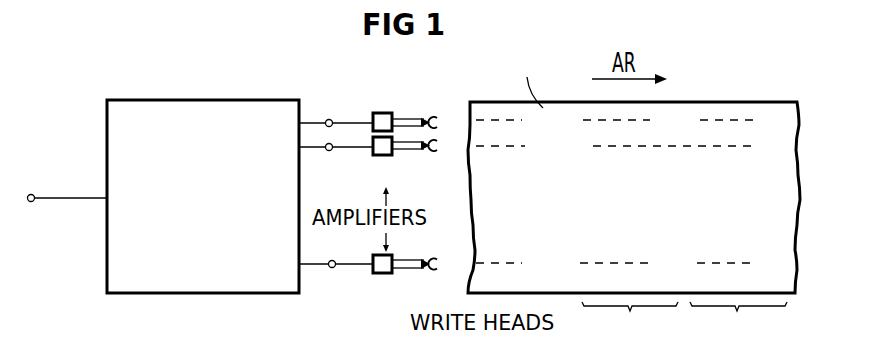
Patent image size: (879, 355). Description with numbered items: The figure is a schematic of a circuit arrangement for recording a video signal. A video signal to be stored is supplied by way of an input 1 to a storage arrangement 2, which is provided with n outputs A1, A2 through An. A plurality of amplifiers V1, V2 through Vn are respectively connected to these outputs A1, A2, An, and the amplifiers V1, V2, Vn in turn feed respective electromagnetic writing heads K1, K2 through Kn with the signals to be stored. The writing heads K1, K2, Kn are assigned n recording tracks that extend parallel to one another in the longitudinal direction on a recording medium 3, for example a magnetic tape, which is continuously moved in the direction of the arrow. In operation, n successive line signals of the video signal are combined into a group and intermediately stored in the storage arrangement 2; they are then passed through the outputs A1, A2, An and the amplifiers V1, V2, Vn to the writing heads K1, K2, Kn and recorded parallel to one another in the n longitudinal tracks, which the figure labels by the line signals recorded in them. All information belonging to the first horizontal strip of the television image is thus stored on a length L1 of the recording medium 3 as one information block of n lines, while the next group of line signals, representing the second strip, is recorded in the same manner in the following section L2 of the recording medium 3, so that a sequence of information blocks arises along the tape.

The input 1 is at (66, 199).
The storage arrangement 2 is at (204, 286).
The recording medium 3 is at (753, 108).
The output A1 is at (336, 107).
The output A2 is at (336, 163).
The output An is at (336, 282).
The amplifier V1 is at (385, 103).
The amplifier V2 is at (385, 163).
The amplifier Vn is at (385, 279).
The electromagnetic writing head K1 is at (422, 101).
The electromagnetic writing head K2 is at (422, 164).
The electromagnetic writing head Kn is at (422, 281).
The length of the recording medium L1 is at (738, 324).
The section of the recording medium L2 is at (630, 324).